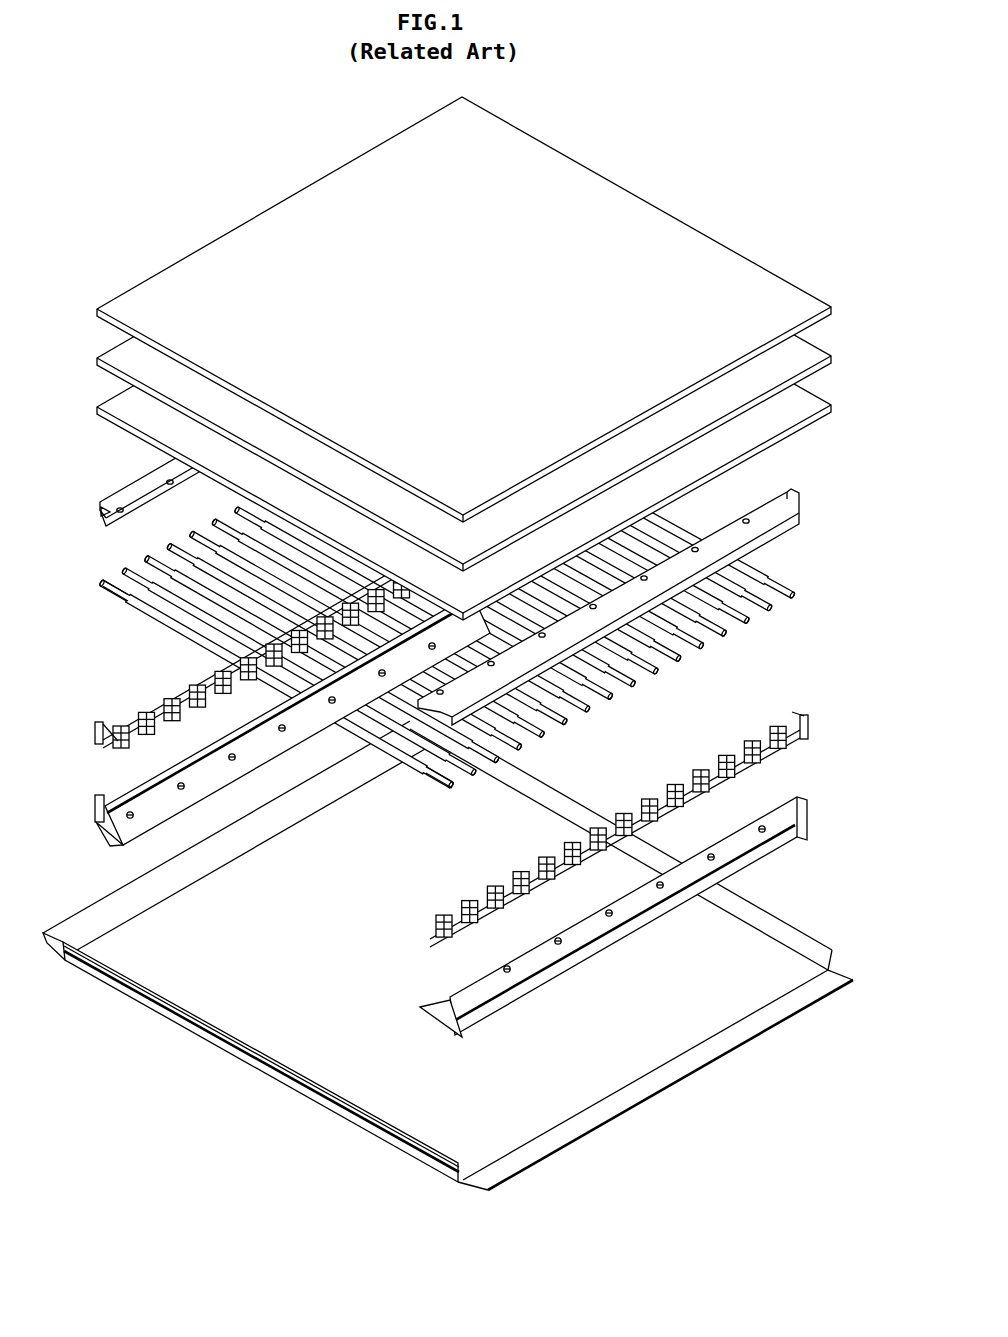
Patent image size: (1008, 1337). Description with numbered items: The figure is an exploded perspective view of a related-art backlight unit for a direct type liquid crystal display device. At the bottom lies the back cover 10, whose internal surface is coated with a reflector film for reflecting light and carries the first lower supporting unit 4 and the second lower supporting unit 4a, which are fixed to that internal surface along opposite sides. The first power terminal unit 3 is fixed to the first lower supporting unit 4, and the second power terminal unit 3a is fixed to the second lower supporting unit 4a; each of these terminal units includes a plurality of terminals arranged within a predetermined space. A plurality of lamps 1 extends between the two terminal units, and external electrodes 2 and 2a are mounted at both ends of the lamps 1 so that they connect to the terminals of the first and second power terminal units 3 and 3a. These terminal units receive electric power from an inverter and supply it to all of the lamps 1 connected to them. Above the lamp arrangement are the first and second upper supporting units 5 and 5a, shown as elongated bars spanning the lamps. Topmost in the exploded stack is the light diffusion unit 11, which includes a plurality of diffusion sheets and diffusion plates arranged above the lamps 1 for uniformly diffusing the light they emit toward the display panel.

The lamp 1 is at (168, 623).
The external electrode 2 is at (113, 588).
The external electrode 2a is at (441, 785).
The first power terminal unit 3 is at (130, 728).
The second power terminal unit 3a is at (430, 930).
The first lower supporting unit 4 is at (105, 832).
The second lower supporting unit 4a is at (432, 1015).
The first upper supporting unit 5 is at (122, 493).
The second upper supporting unit 5a is at (775, 532).
The back cover 10 is at (786, 964).
The light diffusion unit 11 is at (845, 313).